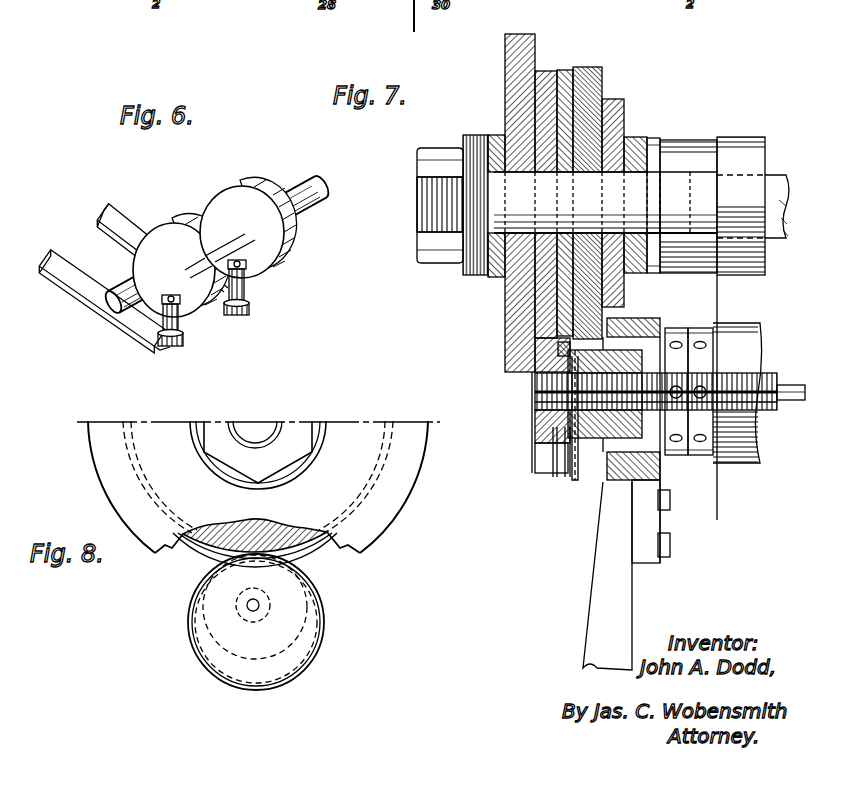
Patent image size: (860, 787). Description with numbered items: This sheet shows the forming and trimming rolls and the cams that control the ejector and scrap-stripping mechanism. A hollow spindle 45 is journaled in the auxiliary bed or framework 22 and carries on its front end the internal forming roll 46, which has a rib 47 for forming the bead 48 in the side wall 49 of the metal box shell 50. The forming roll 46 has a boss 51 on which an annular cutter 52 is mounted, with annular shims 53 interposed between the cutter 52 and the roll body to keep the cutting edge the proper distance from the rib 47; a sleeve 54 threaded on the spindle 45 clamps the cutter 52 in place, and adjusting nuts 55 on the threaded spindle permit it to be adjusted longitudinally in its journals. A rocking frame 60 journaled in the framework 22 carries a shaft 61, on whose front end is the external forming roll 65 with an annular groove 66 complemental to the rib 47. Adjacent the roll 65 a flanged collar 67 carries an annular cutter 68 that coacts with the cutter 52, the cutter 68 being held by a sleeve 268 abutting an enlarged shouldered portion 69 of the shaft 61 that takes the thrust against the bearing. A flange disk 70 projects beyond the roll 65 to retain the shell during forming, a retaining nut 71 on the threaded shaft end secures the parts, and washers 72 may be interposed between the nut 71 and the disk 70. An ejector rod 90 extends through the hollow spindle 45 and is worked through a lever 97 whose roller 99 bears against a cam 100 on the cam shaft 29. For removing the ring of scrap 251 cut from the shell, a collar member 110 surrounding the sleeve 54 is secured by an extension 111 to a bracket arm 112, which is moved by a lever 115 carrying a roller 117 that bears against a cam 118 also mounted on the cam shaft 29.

In FIG. 7, the auxiliary bed or framework 22 is at (756, 466).
In FIG. 6, the cam shaft 29 is at (300, 190).
In FIG. 7, the hollow spindle 45 is at (775, 385).
In FIG. 8, the hollow spindle 45 is at (270, 605).
In FIG. 7, the internal forming roll 46 is at (545, 435).
In FIG. 8, the internal forming roll 46 is at (295, 625).
In FIG. 7, the rib 47 is at (552, 460).
In FIG. 7, the bead 48 is at (566, 478).
In FIG. 8, the bead 48 is at (305, 655).
In FIG. 7, the side wall 49 is at (556, 478).
In FIG. 8, the side wall 49 is at (292, 685).
In FIG. 7, the metal box shell 50 is at (546, 425).
In FIG. 8, the metal box shell 50 is at (218, 668).
In FIG. 7, the boss 51 is at (575, 378).
In FIG. 7, the annular cutter 52 is at (560, 356).
In FIG. 7, the annular shims 53 is at (535, 352).
In FIG. 7, the sleeve 54 is at (586, 440).
In FIG. 7, the adjusting nuts 55 is at (676, 458).
In FIG. 7, the rocking frame 60 is at (742, 148).
In FIG. 7, the shaft 61 is at (778, 180).
In FIG. 8, the shaft 61 is at (245, 430).
In FIG. 7, the external forming roll 65 is at (545, 92).
In FIG. 8, the external forming roll 65 is at (322, 545).
In FIG. 7, the annular groove 66 is at (562, 112).
In FIG. 8, the annular groove 66 is at (188, 540).
In FIG. 7, the flanged collar 67 is at (630, 132).
In FIG. 7, the annular cutter 68 is at (590, 135).
In FIG. 8, the annular cutter 68 is at (200, 548).
In FIG. 7, the enlarged shouldered portion 69 is at (698, 142).
In FIG. 7, the flange disk 70 is at (515, 60).
In FIG. 8, the flange disk 70 is at (380, 520).
In FIG. 7, the retaining nut 71 is at (430, 258).
In FIG. 8, the retaining nut 71 is at (300, 458).
In FIG. 7, the washers 72 is at (470, 272).
In FIG. 8, the washers 72 is at (198, 432).
In FIG. 7, the ejector rod 90 is at (790, 400).
In FIG. 8, the ejector rod 90 is at (253, 610).
In FIG. 6, the lever 97 is at (88, 285).
In FIG. 6, the roller 99 is at (162, 341).
In FIG. 6, the cam 100 is at (210, 306).
In FIG. 7, the collar member 110 is at (640, 326).
In FIG. 7, the extension 111 is at (650, 520).
In FIG. 7, the bracket arm 112 is at (592, 594).
In FIG. 6, the lever 115 is at (133, 222).
In FIG. 6, the roller 117 is at (255, 287).
In FIG. 6, the cam 118 is at (285, 262).
In FIG. 7, the ring of scrap 251 is at (574, 482).
In FIG. 7, the sleeve 268 is at (683, 128).